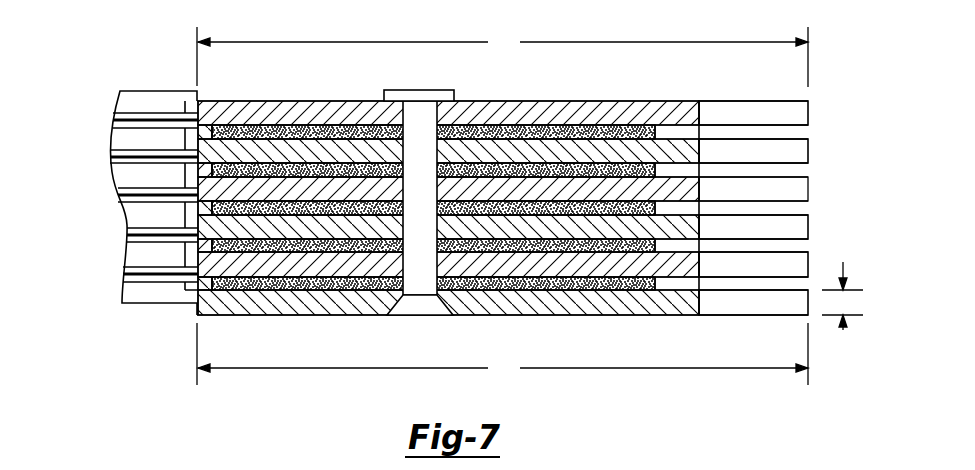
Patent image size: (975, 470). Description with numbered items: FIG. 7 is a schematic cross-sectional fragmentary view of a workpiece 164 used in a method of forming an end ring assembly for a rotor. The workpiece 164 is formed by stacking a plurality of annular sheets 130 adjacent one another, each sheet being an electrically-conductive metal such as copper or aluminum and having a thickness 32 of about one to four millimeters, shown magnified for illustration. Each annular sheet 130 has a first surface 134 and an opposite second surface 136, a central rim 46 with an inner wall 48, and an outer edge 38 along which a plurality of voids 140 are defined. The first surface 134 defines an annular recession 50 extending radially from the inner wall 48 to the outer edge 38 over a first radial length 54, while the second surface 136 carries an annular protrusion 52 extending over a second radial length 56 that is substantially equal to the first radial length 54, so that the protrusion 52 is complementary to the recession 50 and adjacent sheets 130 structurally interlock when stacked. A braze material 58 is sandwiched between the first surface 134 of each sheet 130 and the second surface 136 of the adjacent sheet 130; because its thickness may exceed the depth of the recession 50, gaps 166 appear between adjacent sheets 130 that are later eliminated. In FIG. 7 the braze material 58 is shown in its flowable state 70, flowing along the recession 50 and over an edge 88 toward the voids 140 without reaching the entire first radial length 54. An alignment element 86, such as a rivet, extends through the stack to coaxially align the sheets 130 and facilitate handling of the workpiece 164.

The workpiece 164 is at (112, 39).
The gaps 166 is at (98, 115).
The annular recession 50 is at (204, 121).
The first radial length 54 is at (502, 57).
The alignment element 86 is at (466, 83).
The flowable state 70 is at (563, 116).
The braze material 58 is at (610, 133).
The voids 140 is at (737, 93).
The annular sheets 130 is at (810, 142).
The edge 88 is at (699, 192).
The outer edge 38 is at (812, 186).
The thickness 32 is at (842, 296).
The first surface 134 is at (306, 130).
The second surface 136 is at (307, 173).
The central rim 46 is at (195, 210).
The inner wall 48 is at (200, 208).
The annular protrusion 52 is at (189, 247).
The second radial length 56 is at (502, 354).